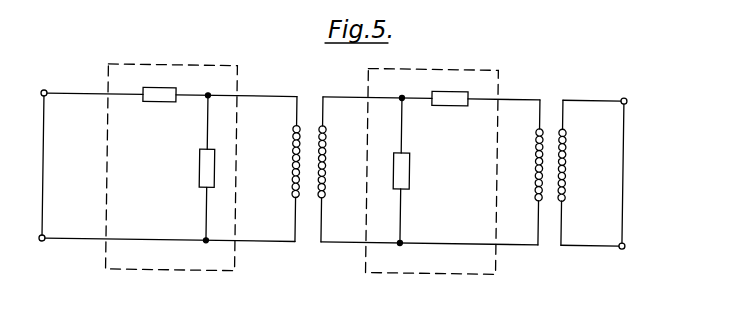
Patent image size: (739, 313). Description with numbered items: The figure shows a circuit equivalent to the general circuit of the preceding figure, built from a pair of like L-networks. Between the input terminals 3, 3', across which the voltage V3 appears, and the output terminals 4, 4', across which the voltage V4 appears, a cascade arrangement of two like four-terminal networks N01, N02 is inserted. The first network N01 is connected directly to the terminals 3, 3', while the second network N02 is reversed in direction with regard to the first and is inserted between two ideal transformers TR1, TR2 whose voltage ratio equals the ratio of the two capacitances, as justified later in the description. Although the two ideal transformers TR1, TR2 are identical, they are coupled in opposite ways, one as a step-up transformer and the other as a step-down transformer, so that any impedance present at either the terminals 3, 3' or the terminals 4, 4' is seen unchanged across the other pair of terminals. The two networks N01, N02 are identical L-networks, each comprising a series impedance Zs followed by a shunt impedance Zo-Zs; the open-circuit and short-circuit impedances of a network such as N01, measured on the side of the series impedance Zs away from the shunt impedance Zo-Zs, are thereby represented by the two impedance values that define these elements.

The terminal 3 is at (48, 81).
The terminal 3' is at (42, 250).
The terminal 4 is at (626, 91).
The terminal 4' is at (617, 260).
The voltage at terminals 3—3' V3 is at (52, 165).
The voltage at terminals 4—4' V4 is at (622, 173).
The series impedance Zs is at (306, 110).
The shunt impedance Zo-Zs is at (298, 169).
The four-terminal network N01 is at (147, 231).
The four-terminal network N02 is at (476, 234).
The ideal transformer TR1 is at (313, 268).
The ideal transformer TR2 is at (574, 264).